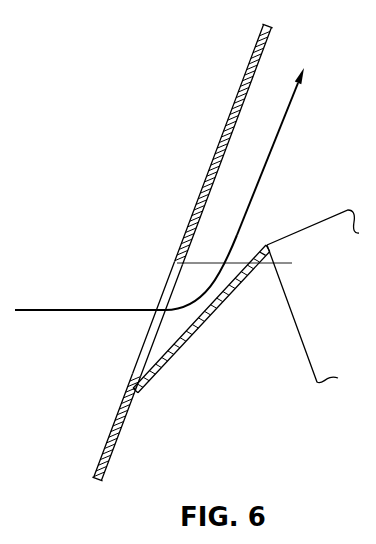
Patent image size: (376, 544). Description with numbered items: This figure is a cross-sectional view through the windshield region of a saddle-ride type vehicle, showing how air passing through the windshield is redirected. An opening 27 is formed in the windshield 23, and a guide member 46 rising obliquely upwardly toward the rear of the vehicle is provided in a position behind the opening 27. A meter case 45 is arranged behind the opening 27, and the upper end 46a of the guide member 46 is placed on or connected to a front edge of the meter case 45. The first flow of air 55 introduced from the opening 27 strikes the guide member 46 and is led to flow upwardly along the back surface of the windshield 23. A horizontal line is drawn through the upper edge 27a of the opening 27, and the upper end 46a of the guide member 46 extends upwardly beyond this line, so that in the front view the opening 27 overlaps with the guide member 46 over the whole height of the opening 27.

The windshield 23 is at (200, 194).
The opening 27 is at (165, 287).
The upper edge of the opening 27a is at (177, 267).
The meter case 45 is at (297, 321).
The guide member 46 is at (163, 357).
The upper end of the guide member 46a is at (267, 244).
The first flow of air 55 is at (266, 171).